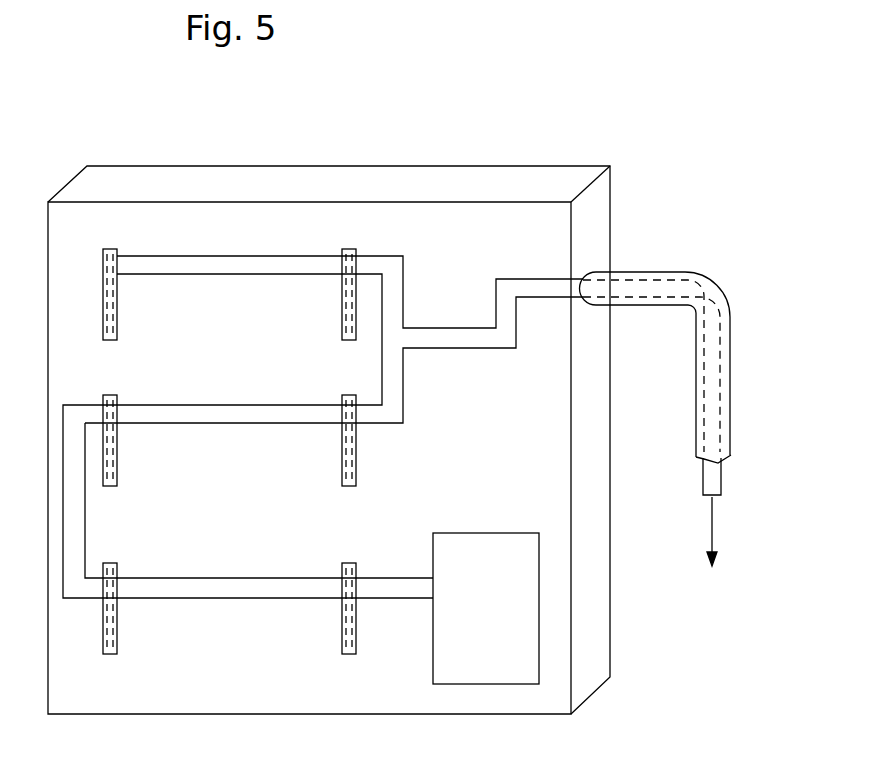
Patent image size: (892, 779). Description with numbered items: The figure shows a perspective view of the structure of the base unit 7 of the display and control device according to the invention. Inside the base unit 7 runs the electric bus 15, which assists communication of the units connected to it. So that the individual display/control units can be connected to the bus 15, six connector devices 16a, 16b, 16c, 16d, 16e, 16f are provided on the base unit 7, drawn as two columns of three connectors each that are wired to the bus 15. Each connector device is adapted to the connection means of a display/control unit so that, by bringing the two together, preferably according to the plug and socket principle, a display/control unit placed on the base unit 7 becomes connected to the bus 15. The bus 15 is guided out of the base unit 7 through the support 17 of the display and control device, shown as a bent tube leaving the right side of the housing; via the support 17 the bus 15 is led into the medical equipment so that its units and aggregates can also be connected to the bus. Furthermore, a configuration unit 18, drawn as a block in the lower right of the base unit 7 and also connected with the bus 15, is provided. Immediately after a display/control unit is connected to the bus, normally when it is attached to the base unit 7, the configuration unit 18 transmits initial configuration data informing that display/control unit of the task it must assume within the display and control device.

The base unit 7 is at (385, 166).
The bus 15 is at (495, 348).
The connector device 16a is at (117, 336).
The connector device 16b is at (342, 332).
The connector device 16c is at (117, 481).
The connector device 16d is at (342, 477).
The connector device 16e is at (117, 650).
The connector device 16f is at (342, 646).
The support 17 is at (685, 272).
The configuration unit 18 is at (505, 673).